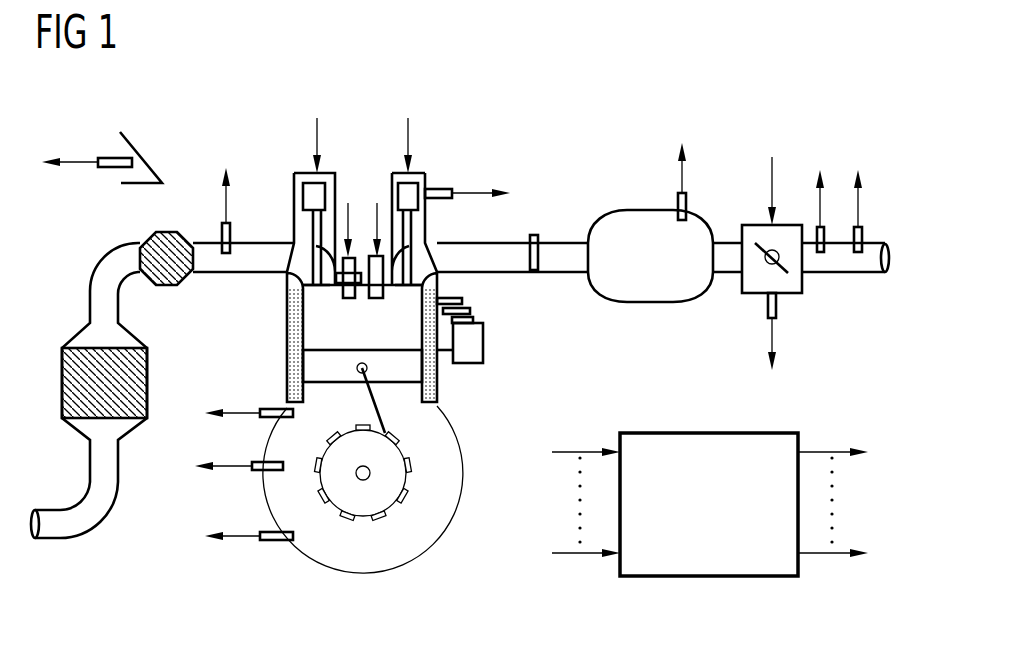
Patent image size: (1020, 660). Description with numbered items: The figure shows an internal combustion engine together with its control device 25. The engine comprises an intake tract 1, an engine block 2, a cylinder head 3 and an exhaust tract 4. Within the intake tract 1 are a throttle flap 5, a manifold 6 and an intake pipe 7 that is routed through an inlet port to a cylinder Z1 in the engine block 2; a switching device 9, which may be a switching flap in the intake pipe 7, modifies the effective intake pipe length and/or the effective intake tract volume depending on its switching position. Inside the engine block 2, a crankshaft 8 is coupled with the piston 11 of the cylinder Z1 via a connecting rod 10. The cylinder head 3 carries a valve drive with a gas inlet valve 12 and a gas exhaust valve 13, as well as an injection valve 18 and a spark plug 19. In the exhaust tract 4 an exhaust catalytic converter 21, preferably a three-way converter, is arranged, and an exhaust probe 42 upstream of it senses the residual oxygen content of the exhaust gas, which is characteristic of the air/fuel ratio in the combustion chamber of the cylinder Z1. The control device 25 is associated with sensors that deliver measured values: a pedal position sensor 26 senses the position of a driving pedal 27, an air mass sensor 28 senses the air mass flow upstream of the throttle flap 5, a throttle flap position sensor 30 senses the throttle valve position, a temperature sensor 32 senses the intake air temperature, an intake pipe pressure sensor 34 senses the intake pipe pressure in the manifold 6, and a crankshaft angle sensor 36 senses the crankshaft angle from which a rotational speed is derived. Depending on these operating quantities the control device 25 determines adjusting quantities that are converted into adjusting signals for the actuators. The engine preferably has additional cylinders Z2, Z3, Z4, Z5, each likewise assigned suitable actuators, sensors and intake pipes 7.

The intake tract 1 is at (658, 318).
The engine block 2 is at (268, 337).
The cylinder head 3 is at (426, 116).
The exhaust tract 4 is at (90, 302).
The throttle flap 5 is at (755, 285).
The manifold 6 is at (630, 222).
The intake pipe 7 is at (560, 252).
The crankshaft 8 is at (365, 480).
The switching device 9 is at (534, 233).
The connecting rod 10 is at (367, 394).
The piston 11 is at (392, 382).
The gas inlet valve 12 is at (409, 290).
The gas exhaust valve 13 is at (292, 293).
The injection valve 18 is at (378, 299).
The spark plug 19 is at (347, 298).
The exhaust catalytic converter 21 is at (147, 237).
The control device 25 is at (722, 578).
The pedal position sensor 26 is at (108, 158).
The driving pedal 27 is at (145, 153).
The air mass sensor 28 is at (821, 254).
The throttle flap position sensor 30 is at (778, 306).
The temperature sensor 32 is at (858, 254).
The intake pipe pressure sensor 34 is at (688, 204).
The crankshaft angle sensor 36 is at (262, 470).
The exhaust probe 42 is at (222, 228).
The cylinder Z1 is at (437, 368).
The additional cylinder Z2 is at (478, 352).
The additional cylinder Z3 is at (474, 321).
The additional cylinder Z4 is at (470, 312).
The additional cylinder Z5 is at (464, 302).